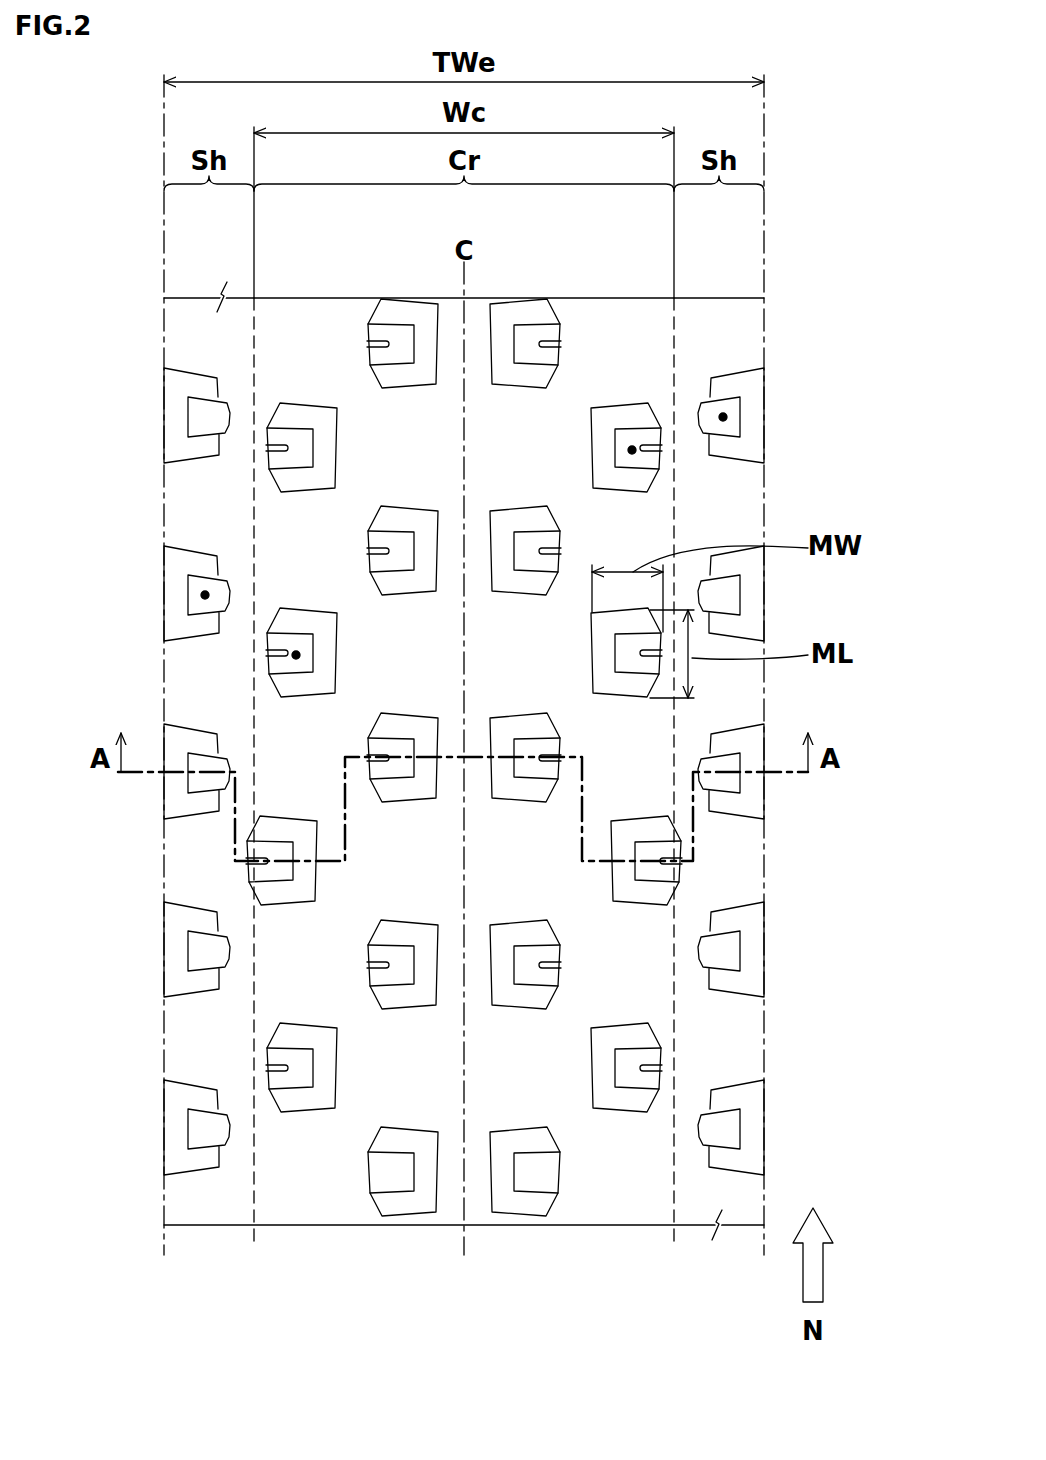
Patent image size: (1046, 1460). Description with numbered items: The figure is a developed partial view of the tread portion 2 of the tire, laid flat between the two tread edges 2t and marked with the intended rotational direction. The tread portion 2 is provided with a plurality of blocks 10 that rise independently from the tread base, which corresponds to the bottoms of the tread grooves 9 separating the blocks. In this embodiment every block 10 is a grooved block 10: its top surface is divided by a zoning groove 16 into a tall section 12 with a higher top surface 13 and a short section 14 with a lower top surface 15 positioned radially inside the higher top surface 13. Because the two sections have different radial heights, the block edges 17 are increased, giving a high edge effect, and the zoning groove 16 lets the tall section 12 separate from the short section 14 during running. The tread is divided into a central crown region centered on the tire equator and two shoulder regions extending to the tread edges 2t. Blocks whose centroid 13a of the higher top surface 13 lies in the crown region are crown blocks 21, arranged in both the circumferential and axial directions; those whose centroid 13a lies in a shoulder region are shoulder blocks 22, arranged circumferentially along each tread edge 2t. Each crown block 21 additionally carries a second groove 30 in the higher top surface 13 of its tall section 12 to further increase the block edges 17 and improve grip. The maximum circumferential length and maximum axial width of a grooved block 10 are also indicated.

The tread portion 2 is at (803, 243).
The tread edge 2t is at (764, 165).
The tread groove 9 is at (303, 572).
The grooved block 10 is at (462, 794).
The tall section 12 is at (388, 332).
The higher top surface 13 is at (540, 1180).
The centroid of the higher top surface 13a is at (205, 595).
The short section 14 is at (415, 313).
The lower top surface 15 is at (503, 1190).
The zoning groove 16 is at (363, 373).
The block edge 17 is at (308, 400).
The crown block 21 is at (465, 777).
The shoulder block 22 is at (736, 388).
The second groove 30 is at (390, 343).